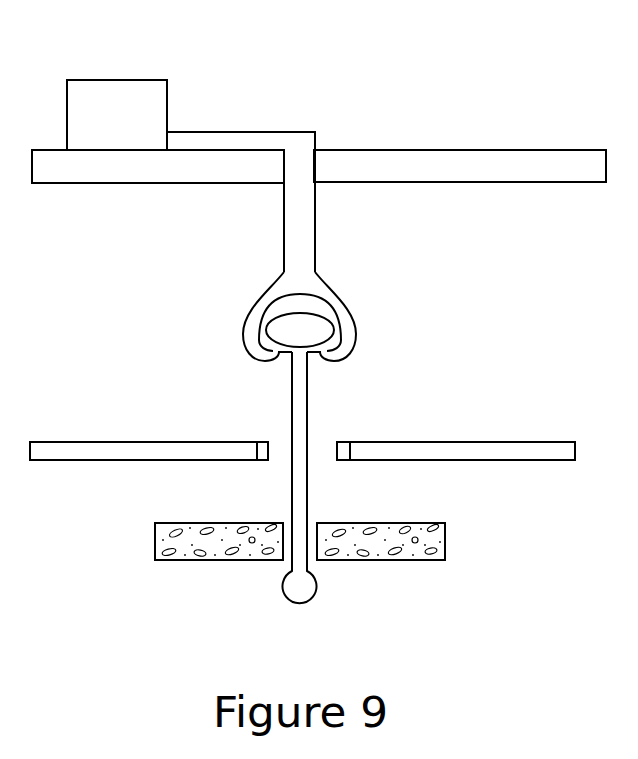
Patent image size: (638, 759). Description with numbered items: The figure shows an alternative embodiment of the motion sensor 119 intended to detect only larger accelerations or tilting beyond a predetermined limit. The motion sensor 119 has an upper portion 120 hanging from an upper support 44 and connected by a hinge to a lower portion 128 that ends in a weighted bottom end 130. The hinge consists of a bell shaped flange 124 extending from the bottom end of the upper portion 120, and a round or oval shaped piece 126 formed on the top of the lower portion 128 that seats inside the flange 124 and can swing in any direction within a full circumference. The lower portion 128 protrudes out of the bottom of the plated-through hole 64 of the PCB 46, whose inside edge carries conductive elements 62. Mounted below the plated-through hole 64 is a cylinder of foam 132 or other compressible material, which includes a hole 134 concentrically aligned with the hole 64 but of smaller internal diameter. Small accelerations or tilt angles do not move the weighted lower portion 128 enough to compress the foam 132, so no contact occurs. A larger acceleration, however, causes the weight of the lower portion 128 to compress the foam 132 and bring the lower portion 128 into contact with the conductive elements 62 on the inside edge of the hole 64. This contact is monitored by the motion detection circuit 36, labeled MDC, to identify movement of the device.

The motion detection circuit 36 is at (150, 80).
The upper platform / beam 44 is at (544, 150).
The PCB 46 is at (500, 442).
The conductive elements 62 is at (263, 442).
The plated-through hole 64 is at (320, 470).
The motion sensor 119 is at (160, 291).
The upper portion 120 is at (316, 205).
The bell shaped flange 124 is at (352, 312).
The round or oval shaped piece 126 is at (284, 332).
The lower portion 128 is at (292, 473).
The weighted bottom end 130 is at (315, 576).
The foam 132 is at (155, 533).
The hole 134 is at (278, 569).